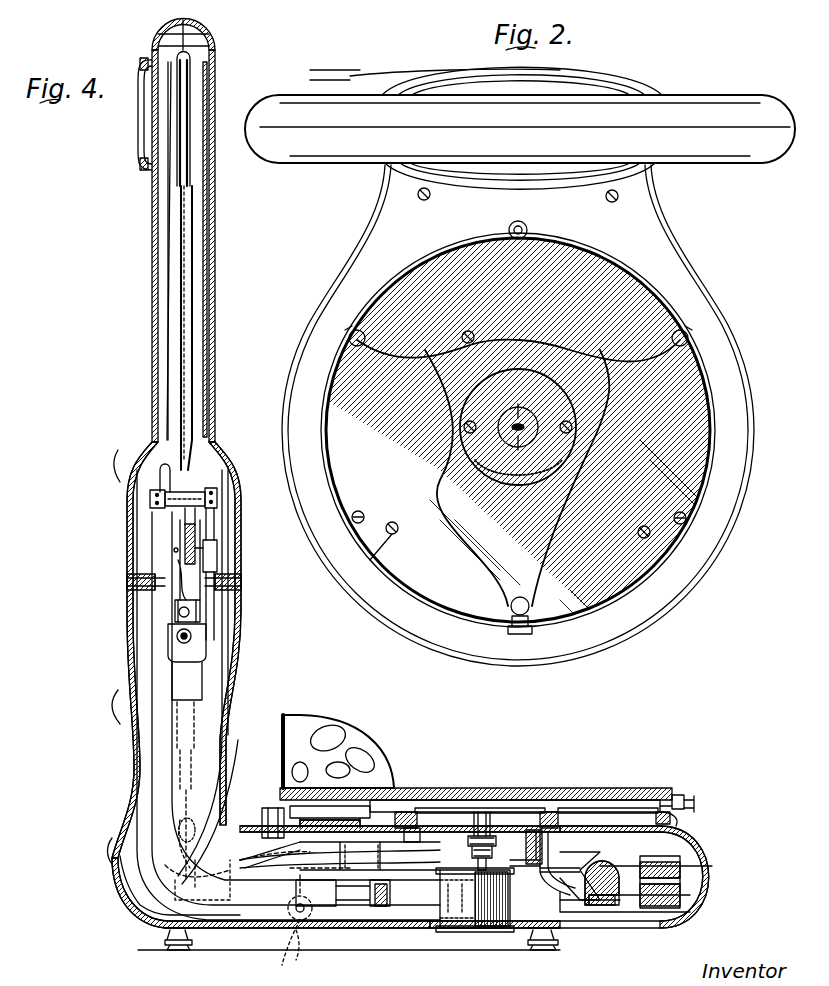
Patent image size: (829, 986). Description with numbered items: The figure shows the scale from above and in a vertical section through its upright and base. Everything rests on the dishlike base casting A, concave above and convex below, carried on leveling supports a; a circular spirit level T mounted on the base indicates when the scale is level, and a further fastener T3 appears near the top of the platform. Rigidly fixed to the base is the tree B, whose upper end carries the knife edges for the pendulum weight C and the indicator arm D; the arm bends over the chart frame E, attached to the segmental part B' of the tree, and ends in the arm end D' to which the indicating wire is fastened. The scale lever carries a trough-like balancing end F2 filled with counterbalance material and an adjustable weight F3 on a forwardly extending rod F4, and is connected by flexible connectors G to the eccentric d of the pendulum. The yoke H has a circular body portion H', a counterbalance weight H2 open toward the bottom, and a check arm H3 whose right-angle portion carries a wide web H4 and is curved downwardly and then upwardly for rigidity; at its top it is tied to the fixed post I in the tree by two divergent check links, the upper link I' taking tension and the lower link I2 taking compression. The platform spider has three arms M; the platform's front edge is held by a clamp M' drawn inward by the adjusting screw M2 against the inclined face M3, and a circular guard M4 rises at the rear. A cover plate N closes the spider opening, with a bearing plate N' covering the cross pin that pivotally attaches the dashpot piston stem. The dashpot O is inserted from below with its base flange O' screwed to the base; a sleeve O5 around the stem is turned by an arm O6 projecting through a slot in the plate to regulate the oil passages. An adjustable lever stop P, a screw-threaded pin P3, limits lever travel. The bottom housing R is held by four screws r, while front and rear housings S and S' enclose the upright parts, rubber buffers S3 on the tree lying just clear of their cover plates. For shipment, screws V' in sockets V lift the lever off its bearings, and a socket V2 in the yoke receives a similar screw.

In FIG. 4, the rear housing S' is at (115, 461).
In FIG. 2, the rear housing S' is at (492, 70).
In FIG. 4, the fan-shaped chart frame E is at (175, 368).
In FIG. 4, the end of indicator arm D' is at (220, 115).
In FIG. 4, the indicator arm D is at (196, 328).
In FIG. 4, the tree B is at (266, 695).
In FIG. 4, the rubber buffer S3 is at (125, 580).
In FIG. 4, the segmental part B' is at (137, 476).
In FIG. 4, the upper check link I' is at (183, 487).
In FIG. 4, the lower check link I2 is at (193, 515).
In FIG. 4, the fixed post I is at (229, 574).
In FIG. 4, the eccentric d is at (196, 564).
In FIG. 4, the pendulum weight C is at (200, 664).
In FIG. 4, the front housing S is at (216, 763).
In FIG. 2, the front housing S is at (520, 158).
In FIG. 4, the web or flange H4 is at (248, 852).
In FIG. 4, the flexible connectors G is at (156, 880).
In FIG. 4, the leveling supports a is at (558, 940).
In FIG. 4, the base casting A is at (705, 898).
In FIG. 4, the balancing end F2 is at (670, 910).
In FIG. 4, the bottom housing R is at (700, 838).
In FIG. 2, the bottom housing R is at (708, 558).
In FIG. 4, the spirit level T is at (266, 814).
In FIG. 2, the spirit level T is at (528, 228).
In FIG. 4, the clamp M' is at (484, 791).
In FIG. 4, the circular guard M4 is at (322, 718).
In FIG. 4, the adjusting screw M2 is at (690, 804).
In FIG. 4, the inclined face M3 is at (680, 822).
In FIG. 4, the cover plate N is at (488, 817).
In FIG. 2, the cover plate N is at (518, 427).
In FIG. 4, the bearing plate N' is at (469, 800).
In FIG. 2, the bearing plate N' is at (526, 438).
In FIG. 4, the arm O6 is at (494, 834).
In FIG. 4, the sleeve O5 is at (492, 852).
In FIG. 4, the dashpot O is at (466, 898).
In FIG. 4, the base flange O' is at (475, 937).
In FIG. 4, the check arm H3 is at (342, 840).
In FIG. 4, the yoke H is at (406, 833).
In FIG. 4, the yoke screw socket V2 is at (340, 856).
In FIG. 4, the rod F4 is at (343, 893).
In FIG. 4, the adjustable weight F3 is at (292, 904).
In FIG. 4, the screw threaded pin P3 is at (310, 926).
In FIG. 4, the lever stop P is at (291, 942).
In FIG. 4, the circular body portion H' is at (600, 871).
In FIG. 4, the yoke counterbalance weight H2 is at (604, 876).
In FIG. 2, the screws r is at (424, 200).
In FIG. 2, the spider arms M is at (518, 466).
In FIG. 2, the screw T3 is at (470, 330).
In FIG. 2, the screw sockets V is at (596, 585).
In FIG. 2, the screws V' is at (378, 559).